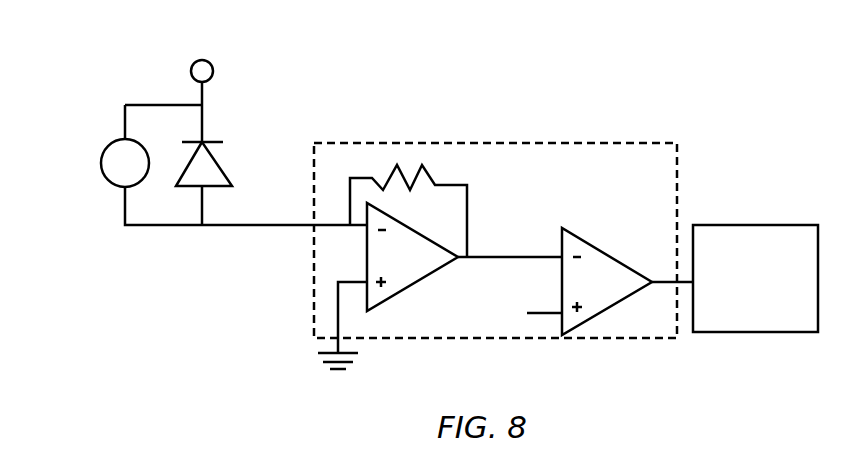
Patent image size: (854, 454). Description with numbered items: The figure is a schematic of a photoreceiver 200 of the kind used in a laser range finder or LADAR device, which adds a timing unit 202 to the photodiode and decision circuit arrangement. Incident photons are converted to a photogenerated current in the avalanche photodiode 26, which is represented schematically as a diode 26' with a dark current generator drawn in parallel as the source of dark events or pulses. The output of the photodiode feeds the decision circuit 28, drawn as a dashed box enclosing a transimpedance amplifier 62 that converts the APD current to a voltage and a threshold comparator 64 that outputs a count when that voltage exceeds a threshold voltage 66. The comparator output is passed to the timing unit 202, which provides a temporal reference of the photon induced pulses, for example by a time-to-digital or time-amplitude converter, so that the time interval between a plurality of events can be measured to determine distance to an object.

The photoreceiver 200 is at (680, 85).
The avalanche photodiode 26 is at (200, 142).
The diode 26' is at (227, 175).
The decision circuit 28 is at (545, 140).
The transimpedance amplifier 62 is at (418, 283).
The threshold comparator 64 is at (590, 240).
The threshold voltage 66 is at (540, 313).
The timing unit 202 is at (735, 223).